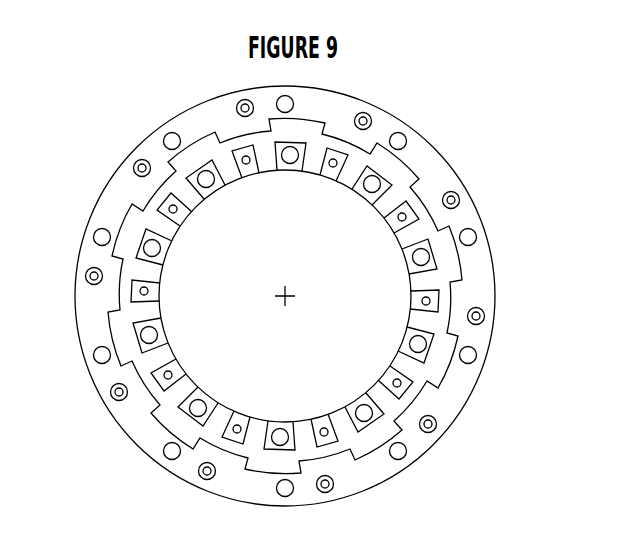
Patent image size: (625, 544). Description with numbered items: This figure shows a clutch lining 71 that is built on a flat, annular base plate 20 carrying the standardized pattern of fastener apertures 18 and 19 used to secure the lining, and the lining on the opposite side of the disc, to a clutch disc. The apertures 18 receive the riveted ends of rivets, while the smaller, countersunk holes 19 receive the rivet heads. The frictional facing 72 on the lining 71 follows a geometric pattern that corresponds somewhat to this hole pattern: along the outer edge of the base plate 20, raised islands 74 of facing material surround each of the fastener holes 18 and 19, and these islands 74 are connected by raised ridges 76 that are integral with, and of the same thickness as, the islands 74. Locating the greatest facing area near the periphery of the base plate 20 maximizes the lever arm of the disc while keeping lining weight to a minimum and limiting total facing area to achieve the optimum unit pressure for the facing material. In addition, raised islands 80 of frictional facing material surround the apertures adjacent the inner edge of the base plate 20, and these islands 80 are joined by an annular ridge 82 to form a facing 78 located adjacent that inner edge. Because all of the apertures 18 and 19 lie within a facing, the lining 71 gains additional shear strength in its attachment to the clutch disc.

The lining 71 is at (88, 190).
The frictional facing 72 is at (345, 105).
The raised islands 74 is at (107, 267).
The raised ridges 76 is at (98, 325).
The facing 78 is at (221, 182).
The raised islands 80 is at (412, 252).
The annular ridge 82 is at (408, 282).
The apertures 18 is at (167, 456).
The holes 19 is at (177, 365).
The base plate 20 is at (408, 365).